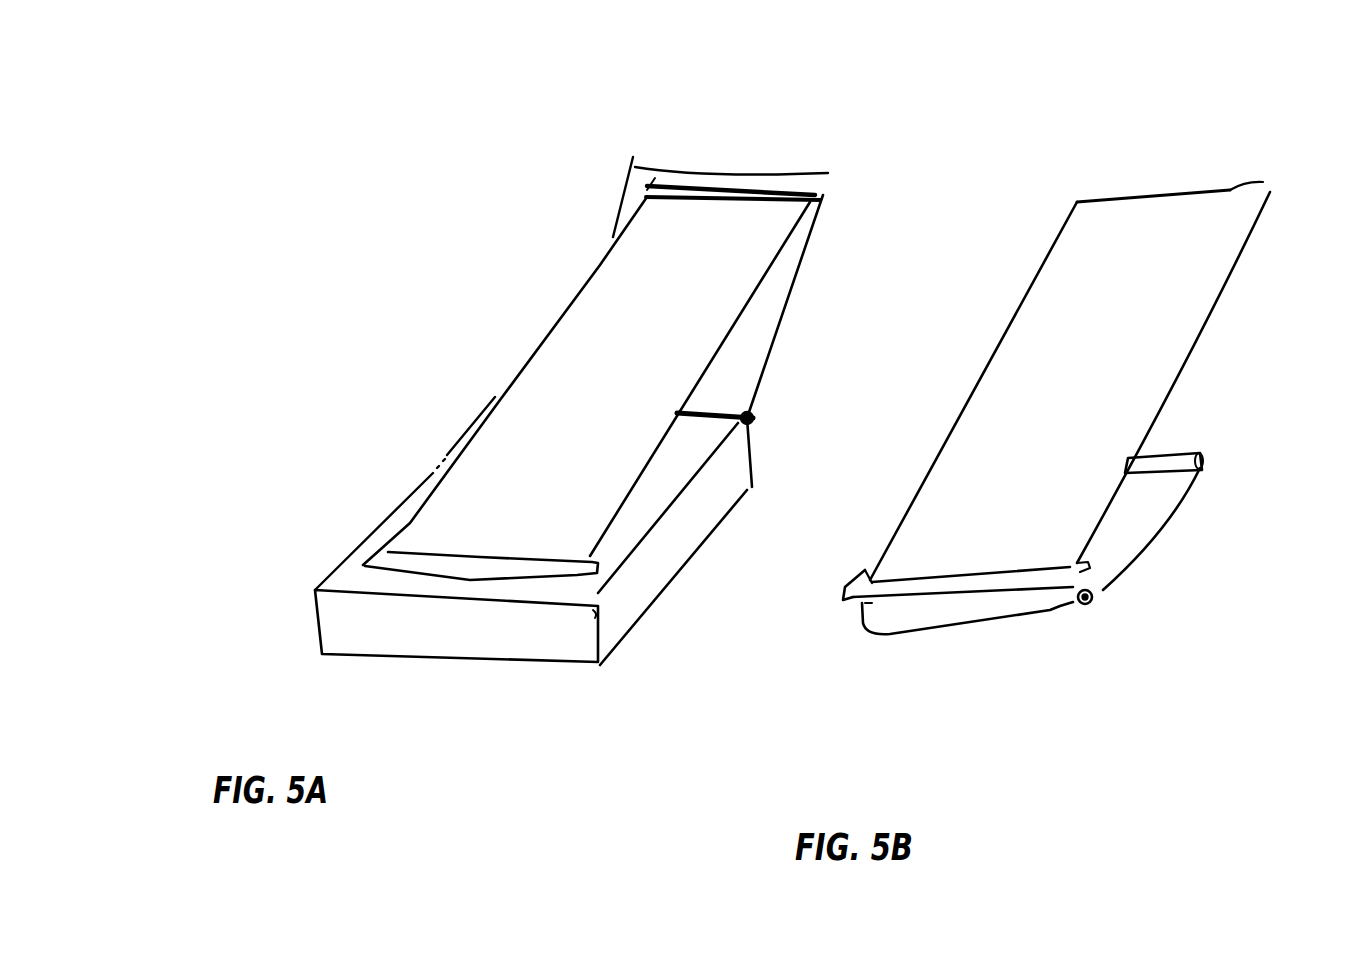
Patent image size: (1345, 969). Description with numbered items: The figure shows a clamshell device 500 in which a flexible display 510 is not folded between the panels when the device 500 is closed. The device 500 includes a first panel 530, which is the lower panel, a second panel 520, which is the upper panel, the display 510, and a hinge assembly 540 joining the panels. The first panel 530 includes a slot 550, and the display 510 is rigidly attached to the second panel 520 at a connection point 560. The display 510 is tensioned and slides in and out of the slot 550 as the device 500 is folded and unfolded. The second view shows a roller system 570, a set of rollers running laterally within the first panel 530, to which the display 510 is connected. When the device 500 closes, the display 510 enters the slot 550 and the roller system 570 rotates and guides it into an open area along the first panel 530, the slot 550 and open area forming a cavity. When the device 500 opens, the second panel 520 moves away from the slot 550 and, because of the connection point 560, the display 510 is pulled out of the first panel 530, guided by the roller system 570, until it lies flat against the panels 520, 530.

In FIG. 5A, the clamshell device 500 is at (498, 172).
In FIG. 5A, the display 510 is at (533, 348).
In FIG. 5B, the display 510 is at (980, 353).
In FIG. 5A, the second panel 520 is at (797, 280).
In FIG. 5A, the first panel 530 is at (680, 575).
In FIG. 5A, the hinge assembly 540 is at (753, 418).
In FIG. 5A, the slot 550 is at (408, 543).
In FIG. 5B, the slot 550 is at (843, 597).
In FIG. 5A, the connection point 560 is at (730, 172).
In FIG. 5B, the connection point 560 is at (1160, 192).
In FIG. 5B, the roller system 570 is at (1203, 467).